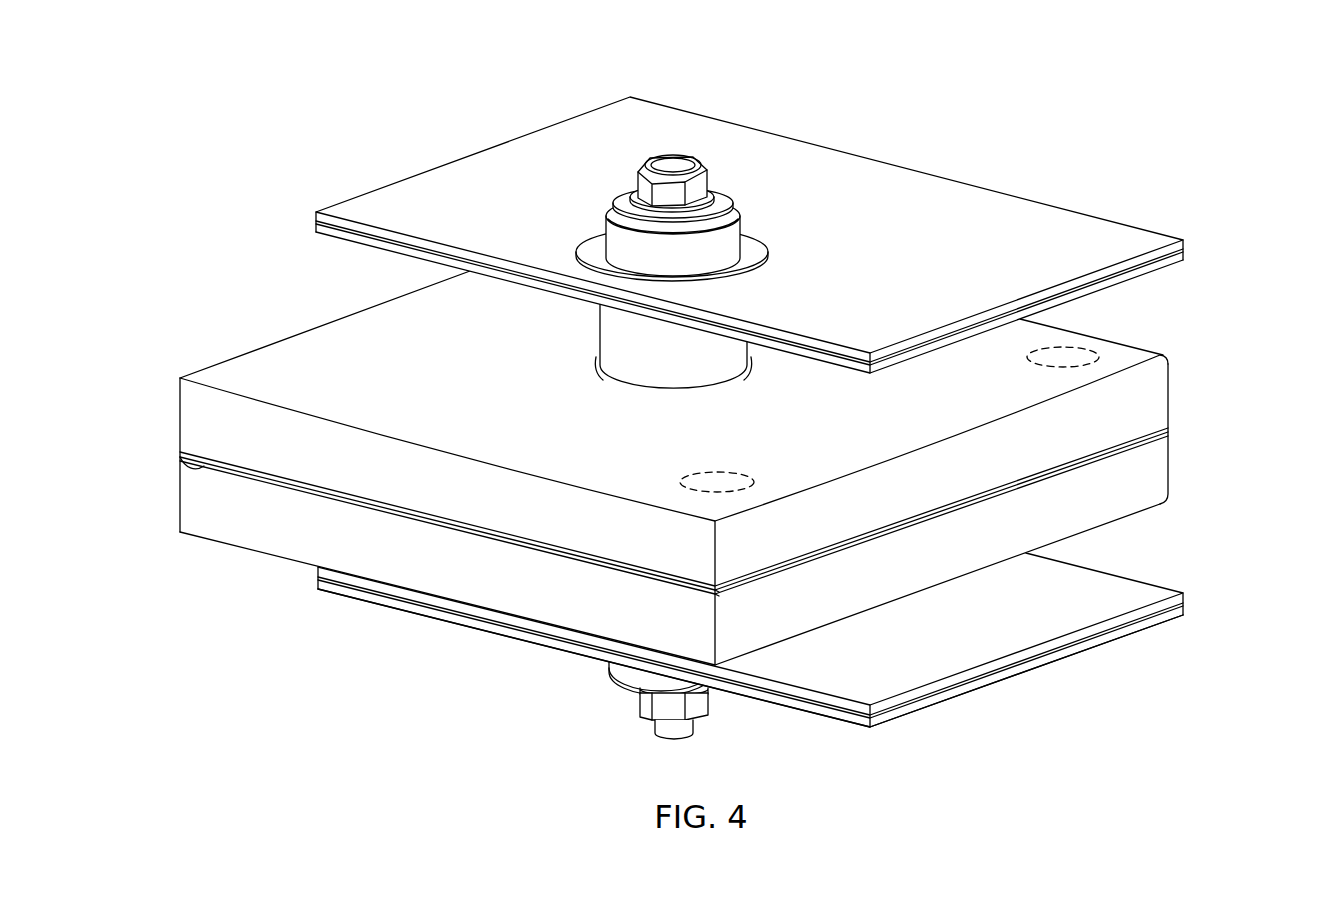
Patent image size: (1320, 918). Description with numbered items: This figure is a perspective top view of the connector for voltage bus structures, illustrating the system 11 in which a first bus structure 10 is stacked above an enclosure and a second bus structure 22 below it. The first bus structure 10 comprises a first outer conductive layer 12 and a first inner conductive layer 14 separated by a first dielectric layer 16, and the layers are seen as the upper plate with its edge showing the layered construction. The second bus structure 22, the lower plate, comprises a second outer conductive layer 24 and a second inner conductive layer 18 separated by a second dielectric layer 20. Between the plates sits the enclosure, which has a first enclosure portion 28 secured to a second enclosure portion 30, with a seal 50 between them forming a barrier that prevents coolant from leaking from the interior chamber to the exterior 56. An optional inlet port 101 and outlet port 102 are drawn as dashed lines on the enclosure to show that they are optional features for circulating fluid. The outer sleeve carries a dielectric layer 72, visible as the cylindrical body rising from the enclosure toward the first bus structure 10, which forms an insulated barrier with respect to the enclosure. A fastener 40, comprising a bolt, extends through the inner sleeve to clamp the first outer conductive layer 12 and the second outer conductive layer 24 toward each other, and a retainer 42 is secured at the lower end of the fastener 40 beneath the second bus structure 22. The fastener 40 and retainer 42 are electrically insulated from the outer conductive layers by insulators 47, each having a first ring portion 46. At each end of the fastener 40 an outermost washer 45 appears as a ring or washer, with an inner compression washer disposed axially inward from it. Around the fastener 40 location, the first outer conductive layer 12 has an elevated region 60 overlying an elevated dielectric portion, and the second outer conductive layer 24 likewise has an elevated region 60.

The first bus structure 10 is at (1079, 113).
The system 11 is at (296, 743).
The first outer conductive layer 12 is at (799, 231).
The first inner conductive layer 14 is at (1157, 270).
The first dielectric layer 16 is at (1184, 245).
The second inner conductive layer 18 is at (1113, 587).
The second dielectric layer 20 is at (1177, 590).
The second bus structure 22 is at (805, 591).
The second outer conductive layer 24 is at (1070, 643).
The first enclosure portion 28 is at (1043, 332).
The second enclosure portion 30 is at (1126, 512).
The fastener 40 is at (673, 185).
The retainer 42 is at (638, 705).
The outermost washer 45 is at (620, 684).
The first ring portion 46 is at (620, 667).
The insulators 47 is at (648, 174).
The seal 50 is at (664, 440).
The exterior 56 is at (235, 368).
The elevated region 60 is at (596, 251).
The dielectric layer 72 is at (622, 337).
The inlet port 101 is at (742, 468).
The outlet port 102 is at (1047, 360).